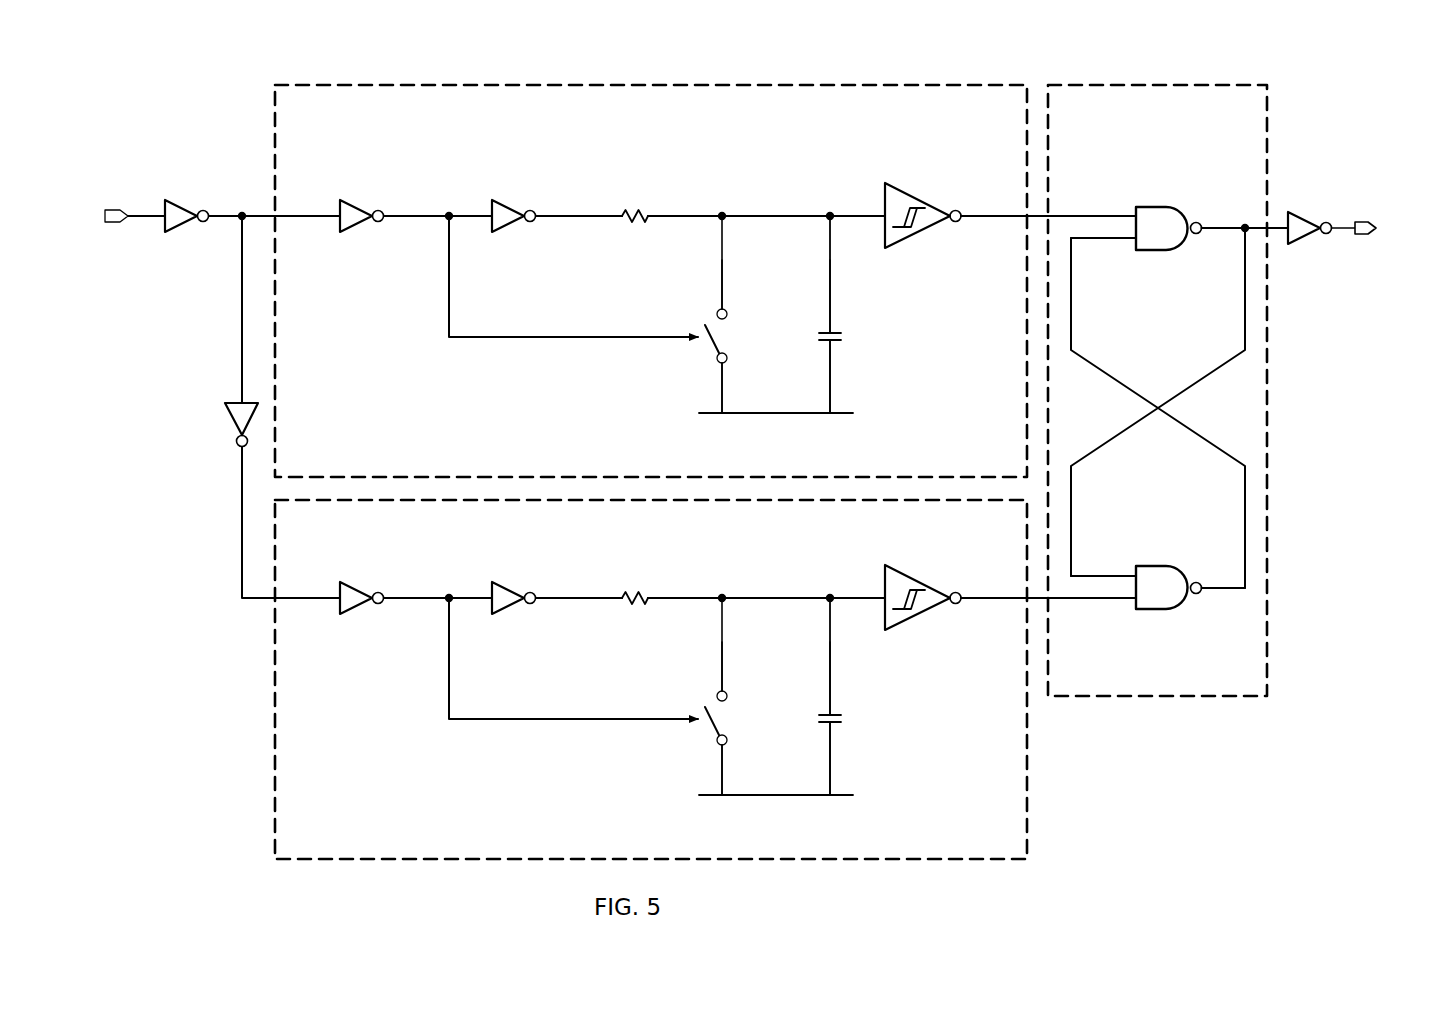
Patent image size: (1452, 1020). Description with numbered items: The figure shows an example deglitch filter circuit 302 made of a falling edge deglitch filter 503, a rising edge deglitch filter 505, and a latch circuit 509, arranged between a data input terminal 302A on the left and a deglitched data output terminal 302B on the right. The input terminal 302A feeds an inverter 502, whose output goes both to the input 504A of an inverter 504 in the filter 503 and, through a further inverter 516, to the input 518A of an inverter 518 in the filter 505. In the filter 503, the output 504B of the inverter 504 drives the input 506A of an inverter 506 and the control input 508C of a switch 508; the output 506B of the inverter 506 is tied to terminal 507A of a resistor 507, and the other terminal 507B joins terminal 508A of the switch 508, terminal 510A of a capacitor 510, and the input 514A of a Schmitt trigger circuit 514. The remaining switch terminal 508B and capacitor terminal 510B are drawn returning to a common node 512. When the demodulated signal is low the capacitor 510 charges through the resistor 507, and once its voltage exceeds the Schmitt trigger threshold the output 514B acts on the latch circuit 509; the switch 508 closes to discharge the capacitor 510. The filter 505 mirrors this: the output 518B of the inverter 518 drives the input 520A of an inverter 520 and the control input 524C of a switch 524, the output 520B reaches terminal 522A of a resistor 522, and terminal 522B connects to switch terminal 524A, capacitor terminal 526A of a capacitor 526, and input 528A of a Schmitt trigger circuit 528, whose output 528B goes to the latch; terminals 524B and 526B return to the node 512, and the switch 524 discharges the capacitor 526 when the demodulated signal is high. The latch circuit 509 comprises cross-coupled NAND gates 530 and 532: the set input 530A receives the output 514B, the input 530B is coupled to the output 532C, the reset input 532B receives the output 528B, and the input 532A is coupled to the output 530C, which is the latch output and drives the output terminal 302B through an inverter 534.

The deglitch filter circuit 302 is at (220, 60).
The data input terminal 302A is at (112, 208).
The deglitched data output terminal 302B is at (1363, 238).
The inverter 502 is at (205, 187).
The falling edge deglitch filter 503 is at (596, 83).
The inverter 504 is at (360, 198).
The input of inverter 504 504A is at (327, 220).
The output of inverter 504 504B is at (396, 220).
The rising edge deglitch filter 505 is at (272, 746).
The inverter 506 is at (512, 198).
The input of inverter 506 506A is at (480, 213).
The output of inverter 506 506B is at (546, 220).
The resistor 507 is at (636, 207).
The terminal of resistor 507 507A is at (612, 214).
The terminal of resistor 507 507B is at (658, 220).
The switch 508 is at (708, 345).
The terminal of switch 508 508A is at (725, 305).
The switch second terminal 508B is at (720, 372).
The control input of switch 508 508C is at (682, 332).
The latch circuit 509 is at (1185, 83).
The capacitor 510 is at (848, 338).
The terminal of capacitor 510 510A is at (834, 326).
The capacitor second terminal 510B is at (828, 348).
The ground 512 is at (775, 415).
The Schmitt trigger circuit 514 is at (920, 237).
The input of Schmitt trigger circuit 514 514A is at (872, 213).
The output of Schmitt trigger circuit 514 514B is at (972, 213).
The inverter 516 is at (232, 420).
The inverter 518 is at (360, 580).
The input of inverter 518 518A is at (327, 602).
The output of inverter 518 518B is at (396, 602).
The inverter 520 is at (512, 580).
The input of inverter 520 520A is at (480, 595).
The output of inverter 520 520B is at (546, 602).
The resistor 522 is at (636, 589).
The terminal of resistor 522 522A is at (612, 596).
The terminal of resistor 522 522B is at (658, 602).
The switch 524 is at (708, 727).
The terminal of switch 524 524A is at (725, 687).
The switch second terminal 524B is at (720, 754).
The control input of switch 524 524C is at (682, 714).
The capacitor 526 is at (848, 720).
The terminal of capacitor 526 526A is at (834, 710).
The capacitor second terminal 526B is at (828, 730).
The Schmitt trigger circuit 528 is at (920, 619).
The input of Schmitt trigger circuit 528 528A is at (872, 595).
The output of Schmitt trigger circuit 528 528B is at (972, 595).
The NAND gate 530 is at (1164, 204).
The input of NAND gate 530 530A is at (1125, 213).
The input of NAND gate 530 530B is at (1125, 242).
The output of NAND gate 530 530C is at (1212, 224).
The NAND gate 532 is at (1164, 613).
The input of NAND gate 532 532A is at (1125, 573).
The input of NAND gate 532 532B is at (1125, 602).
The output of NAND gate 532 532C is at (1210, 592).
The inverter 534 is at (1310, 210).